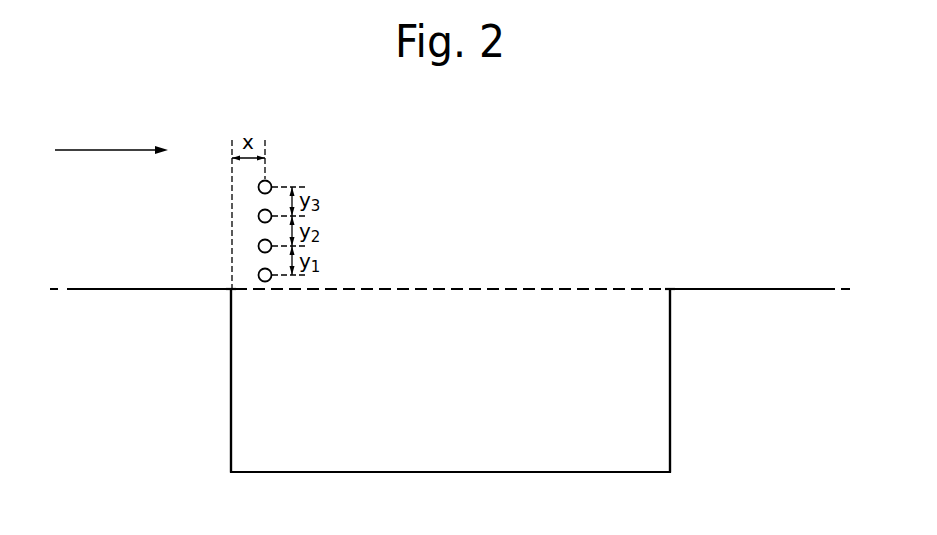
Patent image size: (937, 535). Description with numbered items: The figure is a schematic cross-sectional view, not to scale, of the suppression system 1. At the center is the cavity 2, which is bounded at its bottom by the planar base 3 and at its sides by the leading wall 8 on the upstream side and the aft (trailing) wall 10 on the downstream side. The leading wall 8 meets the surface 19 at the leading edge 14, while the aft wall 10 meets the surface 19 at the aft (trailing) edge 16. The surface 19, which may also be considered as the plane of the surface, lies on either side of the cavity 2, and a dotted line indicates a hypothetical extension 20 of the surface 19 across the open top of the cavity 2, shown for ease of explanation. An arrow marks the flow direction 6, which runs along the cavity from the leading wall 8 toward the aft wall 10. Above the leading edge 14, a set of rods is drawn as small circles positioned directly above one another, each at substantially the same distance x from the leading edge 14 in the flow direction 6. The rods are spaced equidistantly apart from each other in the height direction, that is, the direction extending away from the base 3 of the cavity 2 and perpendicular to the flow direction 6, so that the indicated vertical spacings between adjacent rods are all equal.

The suppression system 1 is at (686, 135).
The cavity 2 is at (336, 428).
The planar base 3 is at (484, 473).
The flow direction 6 is at (87, 150).
The leading wall 8 is at (230, 383).
The aft (trailing) wall 10 is at (670, 385).
The leading edge 14 is at (231, 288).
The aft (trailing) edge 16 is at (670, 288).
The surface 19 is at (102, 288).
The hypothetical extension of the surface 20 is at (580, 288).